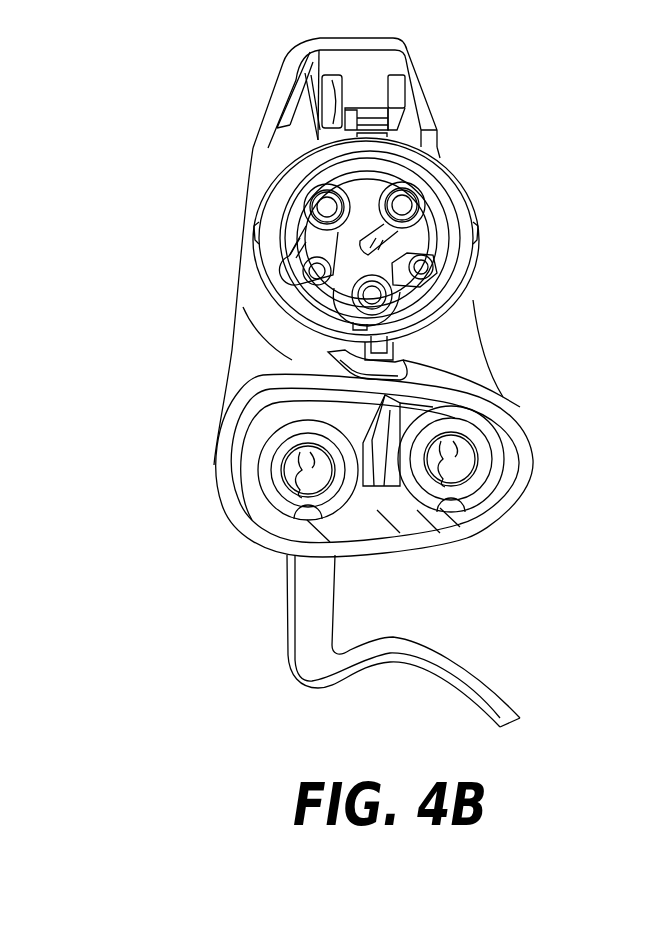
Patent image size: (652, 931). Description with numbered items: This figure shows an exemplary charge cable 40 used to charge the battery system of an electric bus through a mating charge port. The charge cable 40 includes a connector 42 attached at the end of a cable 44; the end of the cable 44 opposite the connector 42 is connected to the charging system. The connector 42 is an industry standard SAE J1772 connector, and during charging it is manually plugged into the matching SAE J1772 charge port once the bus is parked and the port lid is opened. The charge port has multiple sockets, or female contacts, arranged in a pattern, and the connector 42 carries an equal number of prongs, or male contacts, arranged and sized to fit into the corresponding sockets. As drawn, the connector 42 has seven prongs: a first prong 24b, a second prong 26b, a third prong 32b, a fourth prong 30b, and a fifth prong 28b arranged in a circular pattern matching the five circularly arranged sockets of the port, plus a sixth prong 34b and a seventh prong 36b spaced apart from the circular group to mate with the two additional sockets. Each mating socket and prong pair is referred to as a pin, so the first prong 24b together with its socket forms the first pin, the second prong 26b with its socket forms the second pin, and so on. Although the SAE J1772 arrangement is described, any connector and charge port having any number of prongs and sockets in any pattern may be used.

The charge cable 40 is at (154, 111).
The connector 42 is at (472, 216).
The first prong 24b is at (305, 197).
The second prong 26b is at (418, 180).
The fifth prong 28b is at (303, 266).
The fourth prong 30b is at (360, 300).
The third prong 32b is at (434, 270).
The sixth prong 34b is at (302, 465).
The seventh prong 36b is at (470, 460).
The cable 44 is at (466, 672).